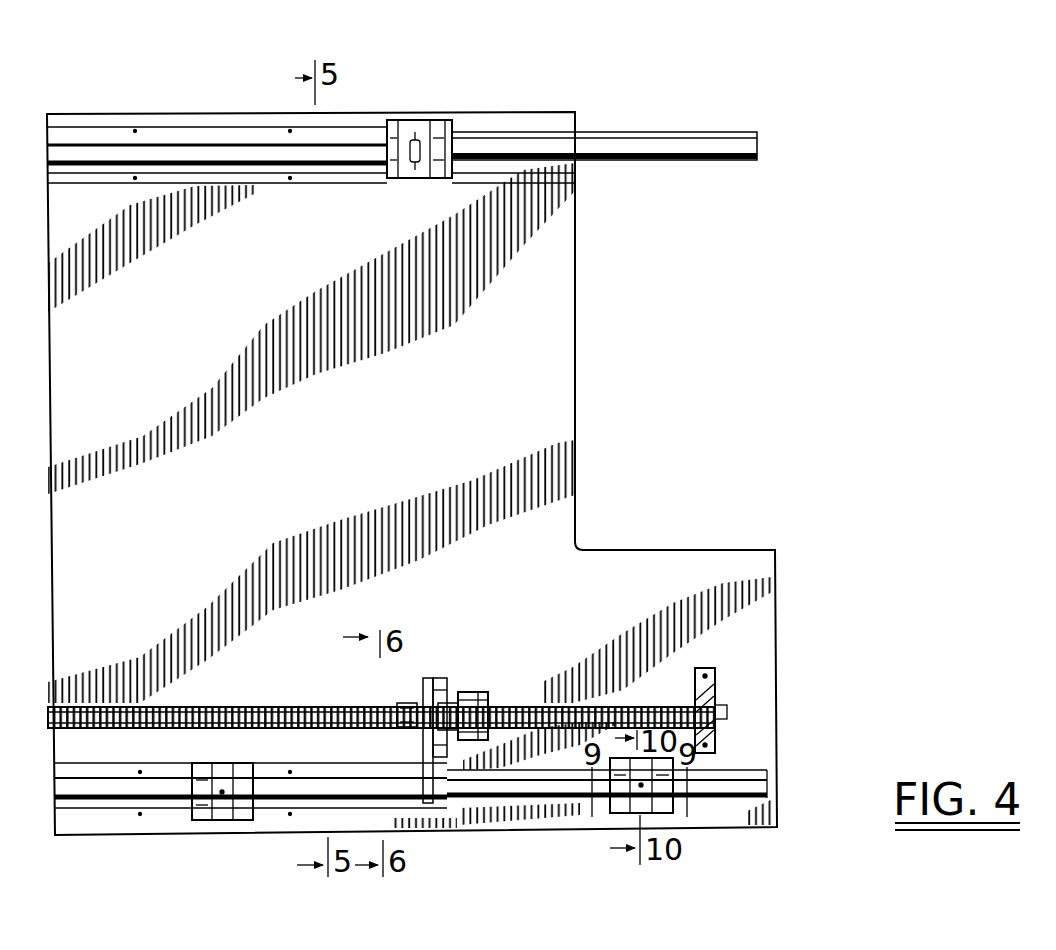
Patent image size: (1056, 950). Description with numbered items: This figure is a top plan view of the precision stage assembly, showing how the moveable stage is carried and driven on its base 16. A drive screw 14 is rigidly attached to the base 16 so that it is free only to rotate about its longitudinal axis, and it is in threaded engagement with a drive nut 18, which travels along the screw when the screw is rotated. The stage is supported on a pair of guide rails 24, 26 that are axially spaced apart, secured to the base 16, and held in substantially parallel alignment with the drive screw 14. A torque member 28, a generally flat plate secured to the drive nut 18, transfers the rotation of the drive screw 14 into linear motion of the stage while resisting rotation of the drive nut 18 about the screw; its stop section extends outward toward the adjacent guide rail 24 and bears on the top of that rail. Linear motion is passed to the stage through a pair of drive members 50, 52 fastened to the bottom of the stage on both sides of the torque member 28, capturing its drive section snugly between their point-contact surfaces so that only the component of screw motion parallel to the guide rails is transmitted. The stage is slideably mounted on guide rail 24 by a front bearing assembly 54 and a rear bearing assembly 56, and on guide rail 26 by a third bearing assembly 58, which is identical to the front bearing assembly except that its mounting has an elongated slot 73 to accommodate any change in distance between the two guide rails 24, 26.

The drive screw 14 is at (250, 672).
The base 16 is at (565, 345).
The drive nut 18 is at (490, 695).
The guide rail 24 is at (727, 787).
The guide rail 26 is at (697, 143).
The torque member 28 is at (427, 680).
The drive member 50 is at (400, 705).
The drive member 52 is at (462, 690).
The front bearing assembly 54 is at (240, 768).
The rear bearing assembly 56 is at (620, 807).
The third bearing assembly 58 is at (440, 122).
The elongated slot 73 is at (425, 122).